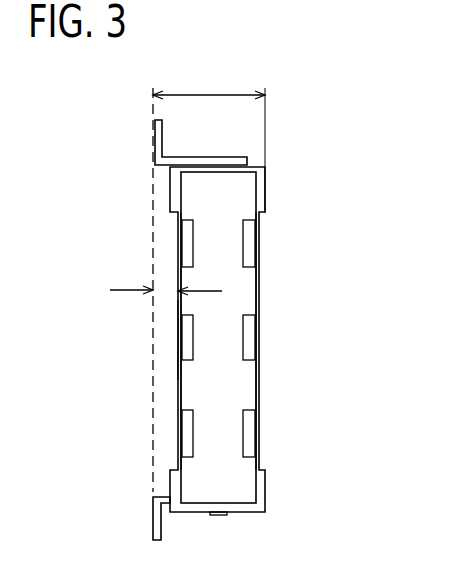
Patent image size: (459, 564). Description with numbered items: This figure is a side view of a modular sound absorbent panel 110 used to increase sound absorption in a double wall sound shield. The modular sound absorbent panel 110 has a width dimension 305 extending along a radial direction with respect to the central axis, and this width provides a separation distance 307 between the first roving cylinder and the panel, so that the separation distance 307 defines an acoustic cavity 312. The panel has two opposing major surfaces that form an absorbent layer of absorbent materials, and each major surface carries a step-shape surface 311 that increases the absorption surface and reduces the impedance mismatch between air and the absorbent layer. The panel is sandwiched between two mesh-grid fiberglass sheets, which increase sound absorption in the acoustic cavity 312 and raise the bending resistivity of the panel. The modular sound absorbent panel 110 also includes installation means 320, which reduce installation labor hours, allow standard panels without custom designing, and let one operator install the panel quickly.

The modular sound absorbent panel 110 is at (286, 198).
The width dimension 305 is at (210, 94).
The installation means 320 is at (163, 141).
The separation distance 307 is at (127, 290).
The step-shape surface 311 is at (243, 338).
The acoustic cavity 312 is at (170, 340).